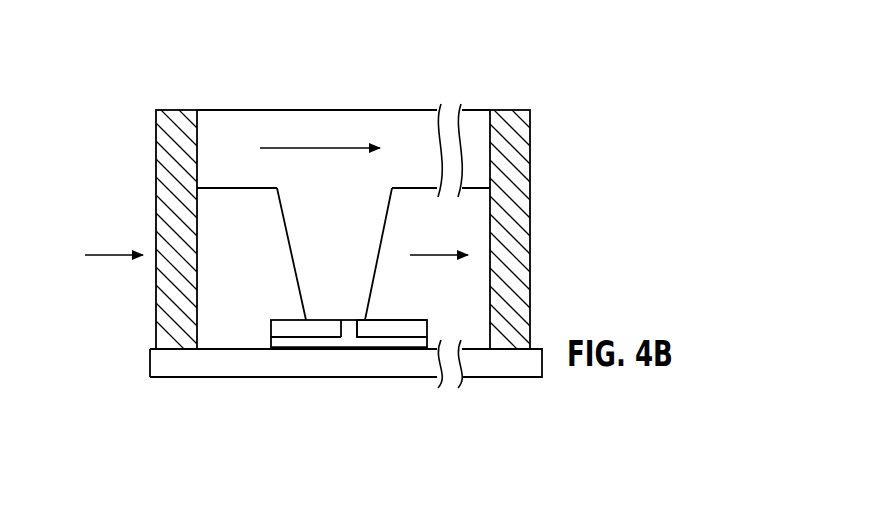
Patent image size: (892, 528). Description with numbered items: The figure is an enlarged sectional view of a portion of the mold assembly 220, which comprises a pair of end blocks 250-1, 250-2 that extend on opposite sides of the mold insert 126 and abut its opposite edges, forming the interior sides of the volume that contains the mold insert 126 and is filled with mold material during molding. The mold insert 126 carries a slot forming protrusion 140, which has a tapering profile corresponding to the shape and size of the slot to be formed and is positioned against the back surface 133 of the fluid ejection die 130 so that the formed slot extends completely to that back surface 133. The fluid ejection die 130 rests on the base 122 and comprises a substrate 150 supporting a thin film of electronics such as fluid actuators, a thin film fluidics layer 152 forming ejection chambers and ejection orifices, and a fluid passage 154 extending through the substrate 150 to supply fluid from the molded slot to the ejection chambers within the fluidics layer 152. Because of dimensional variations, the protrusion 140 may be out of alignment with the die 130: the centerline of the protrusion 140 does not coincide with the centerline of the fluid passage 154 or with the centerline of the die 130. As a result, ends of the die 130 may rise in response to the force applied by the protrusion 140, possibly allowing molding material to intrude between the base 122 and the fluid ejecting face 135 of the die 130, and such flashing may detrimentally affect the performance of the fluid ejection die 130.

The mold assembly 220 is at (130, 112).
The end block 250-1 is at (178, 110).
The end block 250-2 is at (508, 110).
The mold insert 126 is at (320, 110).
The slot forming protrusion 140 is at (300, 253).
The fluid ejection die 130 is at (276, 316).
The substrate 150 is at (383, 328).
The back surface 133 is at (413, 320).
The fluid passage 154 is at (338, 328).
The fluid ejecting face 135 is at (287, 350).
The thin film fluidics layer 152 is at (387, 348).
The base 122 is at (150, 365).